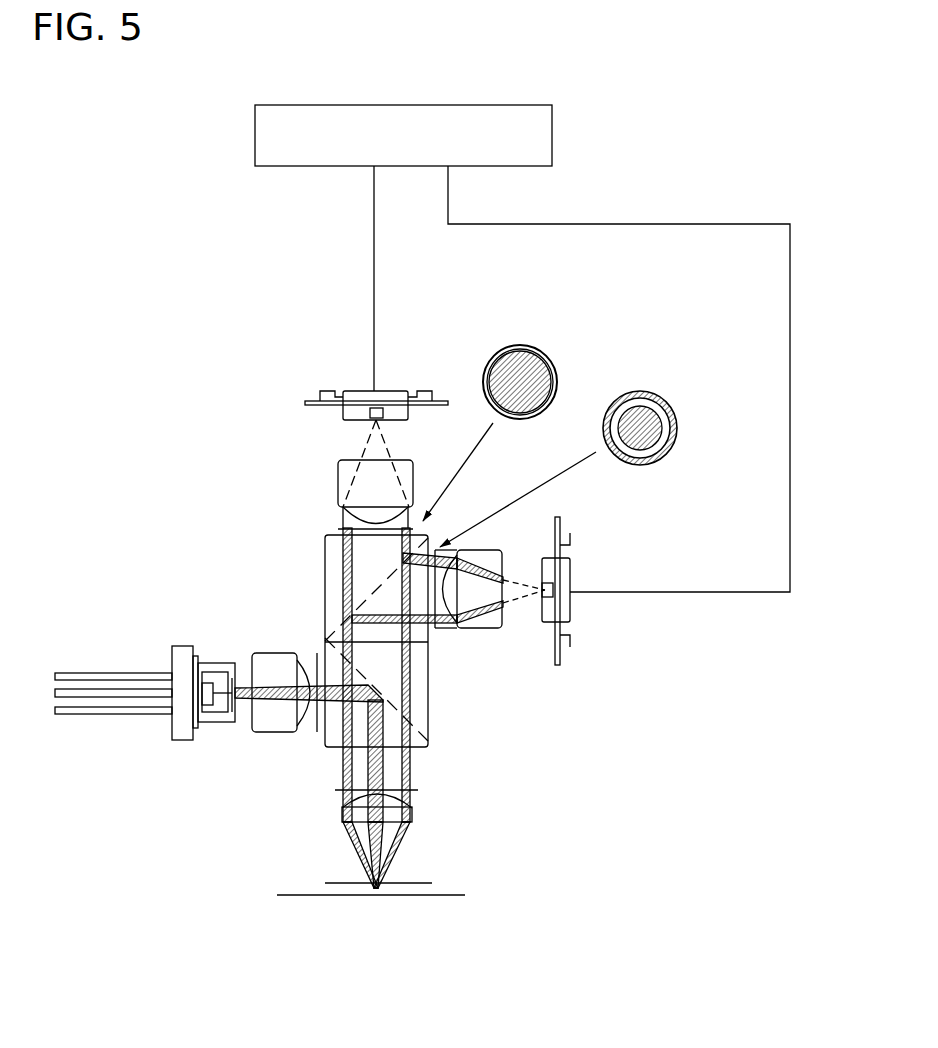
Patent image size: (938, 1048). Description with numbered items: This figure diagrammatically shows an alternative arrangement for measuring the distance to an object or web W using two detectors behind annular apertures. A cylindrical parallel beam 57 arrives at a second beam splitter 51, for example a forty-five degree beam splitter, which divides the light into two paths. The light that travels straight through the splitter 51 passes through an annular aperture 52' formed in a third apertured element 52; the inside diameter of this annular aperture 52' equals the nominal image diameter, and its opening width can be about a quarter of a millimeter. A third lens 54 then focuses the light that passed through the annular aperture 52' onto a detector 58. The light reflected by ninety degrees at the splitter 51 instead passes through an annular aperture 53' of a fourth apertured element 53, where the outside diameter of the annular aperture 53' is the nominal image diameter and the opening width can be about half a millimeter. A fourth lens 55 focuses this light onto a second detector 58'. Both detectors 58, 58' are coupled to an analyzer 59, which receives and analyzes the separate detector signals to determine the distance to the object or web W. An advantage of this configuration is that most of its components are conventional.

The analyzer 59 is at (556, 134).
The detector 58 is at (356, 395).
The third lens 54 is at (337, 467).
The third apertured element 52 is at (557, 359).
The annular aperture 52' is at (566, 369).
The fourth apertured element 53 is at (682, 410).
The annular aperture 53' is at (693, 415).
The second beam splitter 51 is at (323, 583).
The fourth lens 55 is at (485, 634).
The detector 58' is at (610, 591).
The cylindrical parallel beam 57 is at (412, 683).
The workpiece W is at (271, 898).